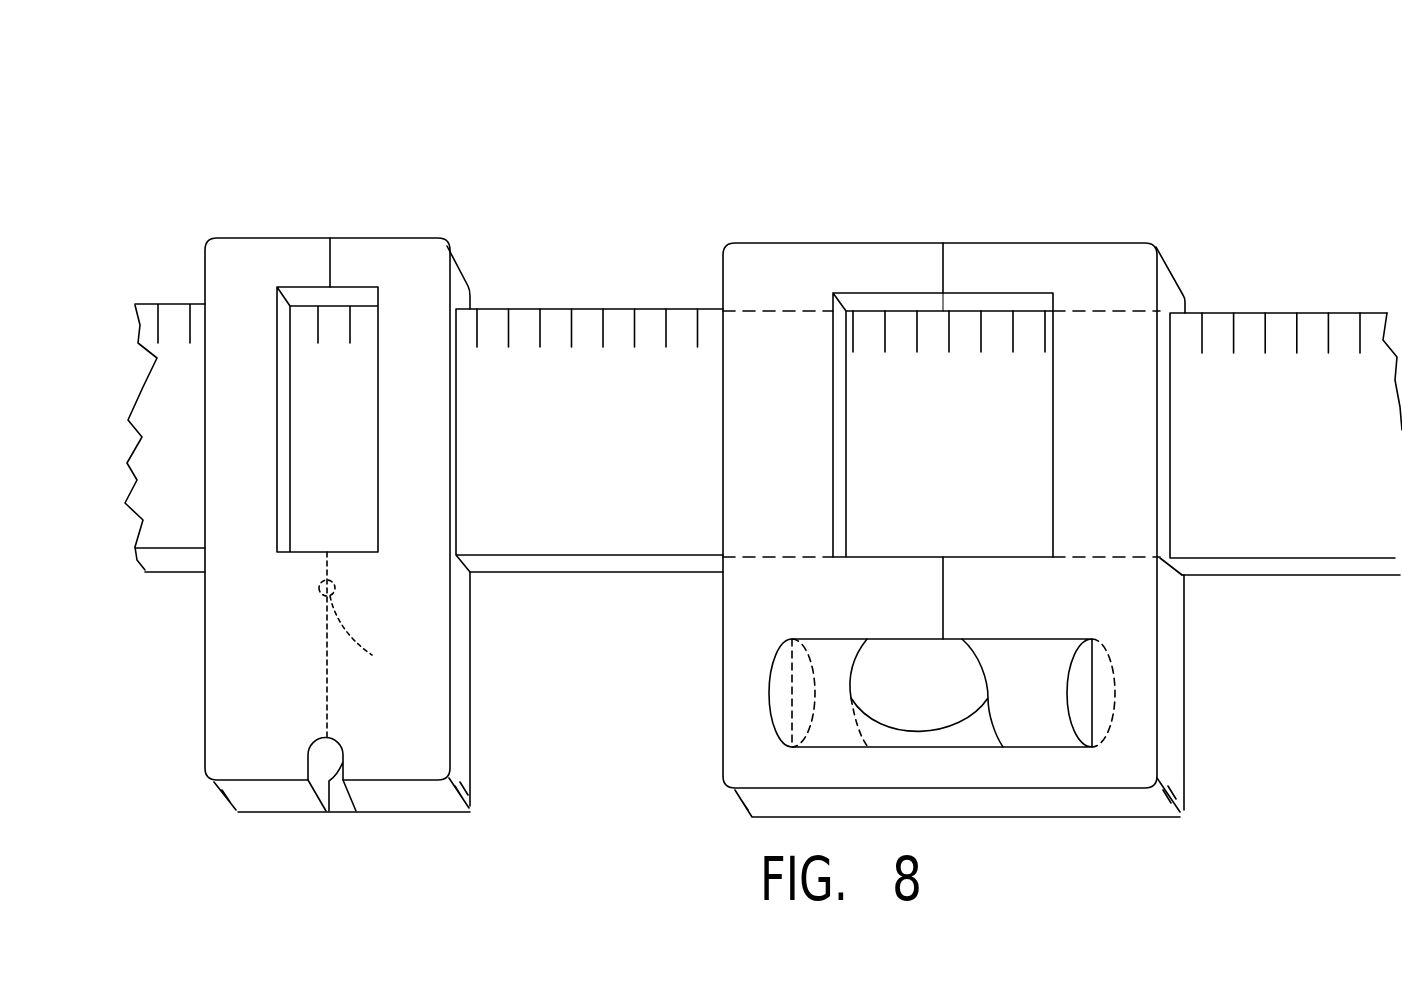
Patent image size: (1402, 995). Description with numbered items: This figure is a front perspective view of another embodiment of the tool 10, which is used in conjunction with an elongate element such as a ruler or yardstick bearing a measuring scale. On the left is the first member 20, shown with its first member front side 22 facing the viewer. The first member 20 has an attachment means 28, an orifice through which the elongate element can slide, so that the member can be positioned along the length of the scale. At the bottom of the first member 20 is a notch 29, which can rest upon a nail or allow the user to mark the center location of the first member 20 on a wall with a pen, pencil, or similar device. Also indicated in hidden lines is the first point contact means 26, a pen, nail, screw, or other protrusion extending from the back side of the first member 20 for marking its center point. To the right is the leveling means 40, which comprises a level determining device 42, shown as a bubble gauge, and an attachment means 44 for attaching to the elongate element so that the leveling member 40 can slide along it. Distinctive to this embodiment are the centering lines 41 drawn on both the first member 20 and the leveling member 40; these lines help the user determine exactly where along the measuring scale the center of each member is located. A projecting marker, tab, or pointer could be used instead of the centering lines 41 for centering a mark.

The tool 10 is at (778, 127).
The first member 20 is at (378, 483).
The first member front side 22 is at (253, 278).
The first point contact means 26 is at (374, 622).
The attachment means 28 is at (462, 446).
The notch 29 is at (335, 808).
The leveling means 40 is at (1173, 283).
The centering lines 41 is at (333, 250).
The level determining device 42 is at (1030, 655).
The attachment means 44 is at (1170, 433).